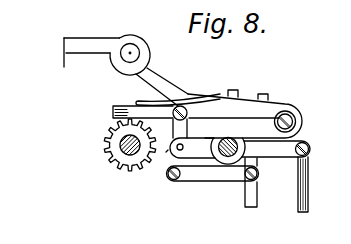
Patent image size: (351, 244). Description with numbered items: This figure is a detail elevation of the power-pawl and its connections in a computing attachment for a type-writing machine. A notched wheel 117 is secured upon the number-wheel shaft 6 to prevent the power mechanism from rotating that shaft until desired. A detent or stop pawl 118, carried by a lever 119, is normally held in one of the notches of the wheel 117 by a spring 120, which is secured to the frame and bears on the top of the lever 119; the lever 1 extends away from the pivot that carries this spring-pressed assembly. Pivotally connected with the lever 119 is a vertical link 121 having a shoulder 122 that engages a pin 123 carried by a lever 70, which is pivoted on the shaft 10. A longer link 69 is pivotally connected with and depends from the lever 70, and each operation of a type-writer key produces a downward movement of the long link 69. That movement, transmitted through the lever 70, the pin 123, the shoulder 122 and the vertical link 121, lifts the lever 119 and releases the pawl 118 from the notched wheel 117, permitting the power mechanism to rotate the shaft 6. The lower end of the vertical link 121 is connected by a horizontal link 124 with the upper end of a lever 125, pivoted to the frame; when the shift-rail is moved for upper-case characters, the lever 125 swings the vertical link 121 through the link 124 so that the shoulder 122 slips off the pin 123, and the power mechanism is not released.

The operating lever 1 is at (126, 70).
The number-wheel shaft 6 is at (121, 159).
The shaft 10 is at (236, 140).
The long link 69 is at (313, 184).
The lever 70 is at (277, 154).
The notched wheel 117 is at (115, 144).
The detent pawl 118 is at (127, 113).
The lever 119 is at (233, 115).
The spring 120 is at (181, 93).
The vertical link 121 is at (166, 152).
The shoulder 122 is at (188, 147).
The pin 123 is at (183, 158).
The horizontal link 124 is at (232, 179).
The lever 125 is at (254, 198).